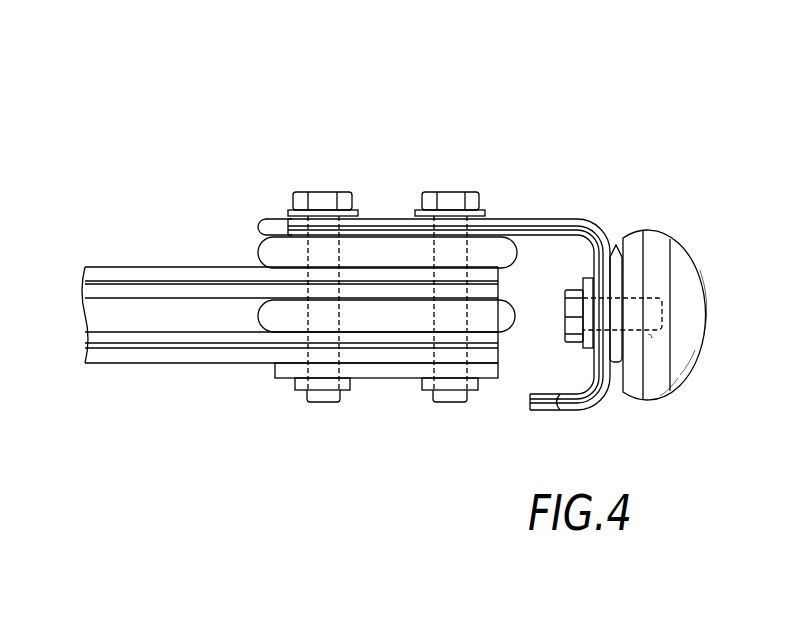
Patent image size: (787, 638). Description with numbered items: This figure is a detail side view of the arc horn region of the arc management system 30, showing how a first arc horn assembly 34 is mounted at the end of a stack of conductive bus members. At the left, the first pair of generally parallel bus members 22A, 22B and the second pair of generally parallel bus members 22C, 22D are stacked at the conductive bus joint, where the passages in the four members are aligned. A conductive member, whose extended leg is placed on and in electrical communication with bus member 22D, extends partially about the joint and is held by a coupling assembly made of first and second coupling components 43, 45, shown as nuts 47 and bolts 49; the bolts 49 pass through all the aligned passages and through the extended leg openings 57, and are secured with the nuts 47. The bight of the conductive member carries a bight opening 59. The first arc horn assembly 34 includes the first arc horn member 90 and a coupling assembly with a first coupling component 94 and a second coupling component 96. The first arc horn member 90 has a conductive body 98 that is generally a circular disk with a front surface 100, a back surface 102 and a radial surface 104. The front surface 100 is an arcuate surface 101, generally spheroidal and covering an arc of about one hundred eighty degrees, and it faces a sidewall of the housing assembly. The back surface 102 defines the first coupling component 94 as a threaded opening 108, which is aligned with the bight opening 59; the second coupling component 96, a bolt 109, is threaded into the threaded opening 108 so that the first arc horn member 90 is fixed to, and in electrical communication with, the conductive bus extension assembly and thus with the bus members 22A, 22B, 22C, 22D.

The arc management system 30 is at (766, 110).
The bus member 22A is at (128, 272).
The bus member 22B is at (110, 337).
The bus member 22C is at (262, 250).
The bus member 22D is at (260, 318).
The first coupling component 43 is at (349, 200).
The second coupling component 45 is at (350, 386).
The nut 47 is at (295, 388).
The bolt 49 is at (295, 196).
The extended leg opening 57 is at (482, 222).
The bight opening 59 is at (585, 348).
The first coupling component 94 is at (612, 240).
The second coupling component 96 is at (565, 316).
The conductive body 98 is at (693, 340).
The front surface 100 is at (703, 303).
The arcuate surface 101 is at (685, 373).
The back surface 102 is at (618, 255).
The radial surface 104 is at (672, 242).
The threaded opening 108 is at (650, 337).
The bolt 109 is at (562, 298).
The first arc horn member 90 is at (688, 282).
The first arc horn assembly 34 is at (646, 232).